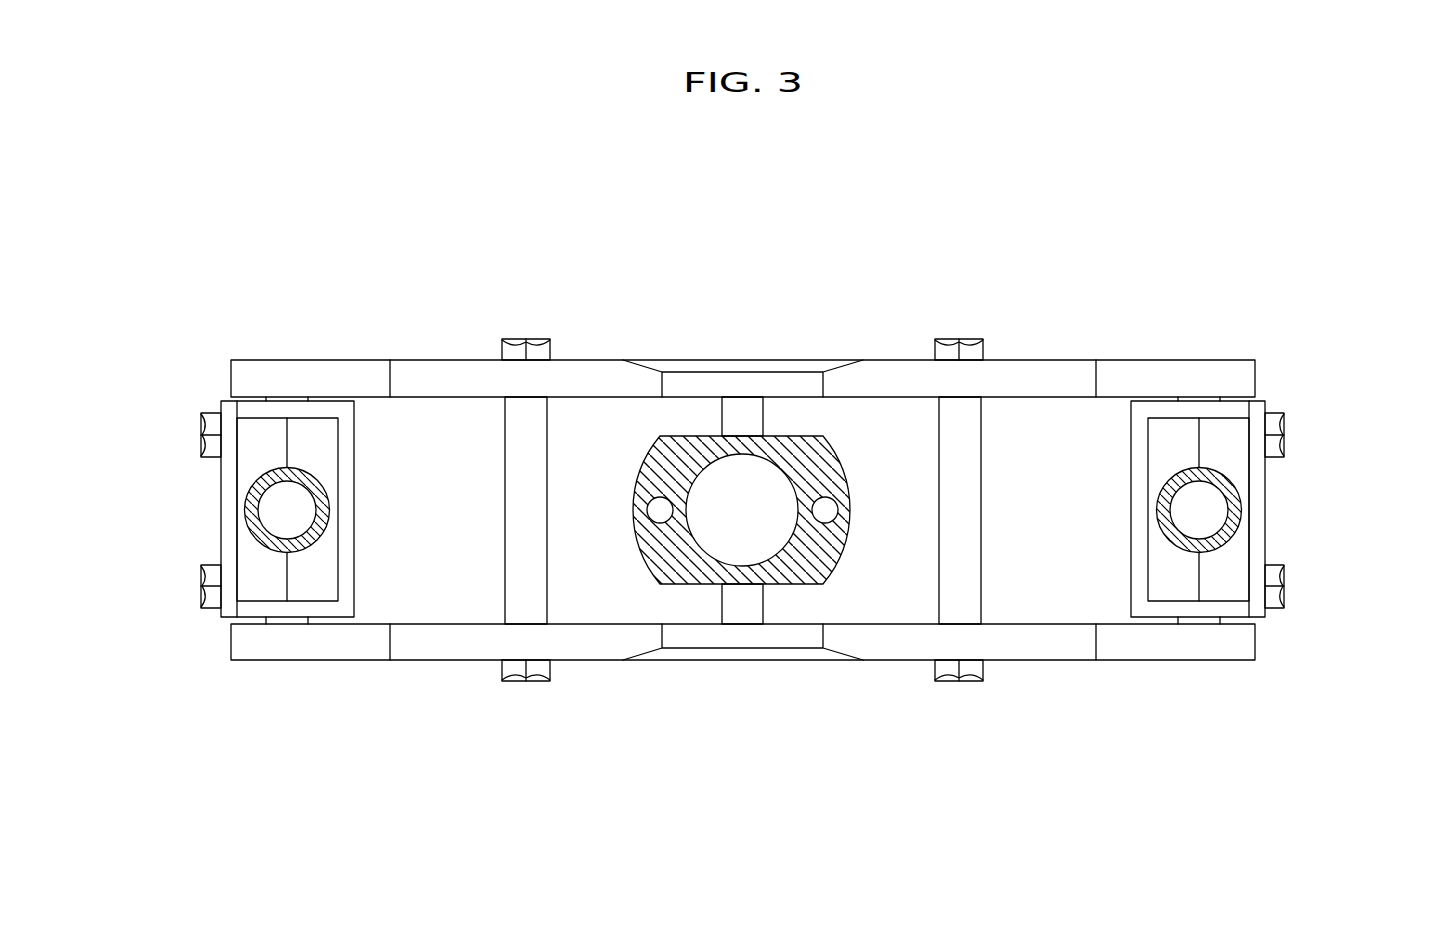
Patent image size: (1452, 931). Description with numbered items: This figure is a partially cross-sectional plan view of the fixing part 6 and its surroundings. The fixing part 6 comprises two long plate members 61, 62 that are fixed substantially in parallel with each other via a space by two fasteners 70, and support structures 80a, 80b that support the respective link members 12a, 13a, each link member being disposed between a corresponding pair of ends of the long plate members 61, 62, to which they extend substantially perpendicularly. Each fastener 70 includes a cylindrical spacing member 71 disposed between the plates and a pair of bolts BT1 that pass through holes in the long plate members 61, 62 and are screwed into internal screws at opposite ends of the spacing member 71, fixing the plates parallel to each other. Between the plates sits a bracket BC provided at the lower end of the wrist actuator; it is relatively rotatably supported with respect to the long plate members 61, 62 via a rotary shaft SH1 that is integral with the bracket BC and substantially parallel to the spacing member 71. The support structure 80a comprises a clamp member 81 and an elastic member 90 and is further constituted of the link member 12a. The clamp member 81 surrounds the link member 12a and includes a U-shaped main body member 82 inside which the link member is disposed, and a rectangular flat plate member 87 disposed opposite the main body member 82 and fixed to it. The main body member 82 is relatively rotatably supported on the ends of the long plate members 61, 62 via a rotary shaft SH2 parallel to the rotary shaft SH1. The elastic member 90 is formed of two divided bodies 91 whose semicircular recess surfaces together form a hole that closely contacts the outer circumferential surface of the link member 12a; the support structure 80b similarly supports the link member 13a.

The fixing part 6 is at (670, 284).
The long plate member 61 is at (893, 660).
The long plate member 62 is at (893, 360).
The fastener 70 is at (742, 476).
The spacing member 71 is at (503, 458).
The support structure 80a is at (1292, 398).
The support structure 80b is at (720, 511).
The clamp member 81 is at (218, 477).
The main body member 82 is at (355, 512).
The flat plate member 87 is at (222, 503).
The elastic member 90 is at (307, 575).
The divided body 91 is at (252, 560).
The link member 12a is at (1238, 535).
The link member 13a is at (248, 535).
The bracket BC is at (848, 472).
The bolt BT1 is at (523, 339).
The rotary shaft SH1 is at (763, 417).
The rotary shaft SH2 is at (287, 397).